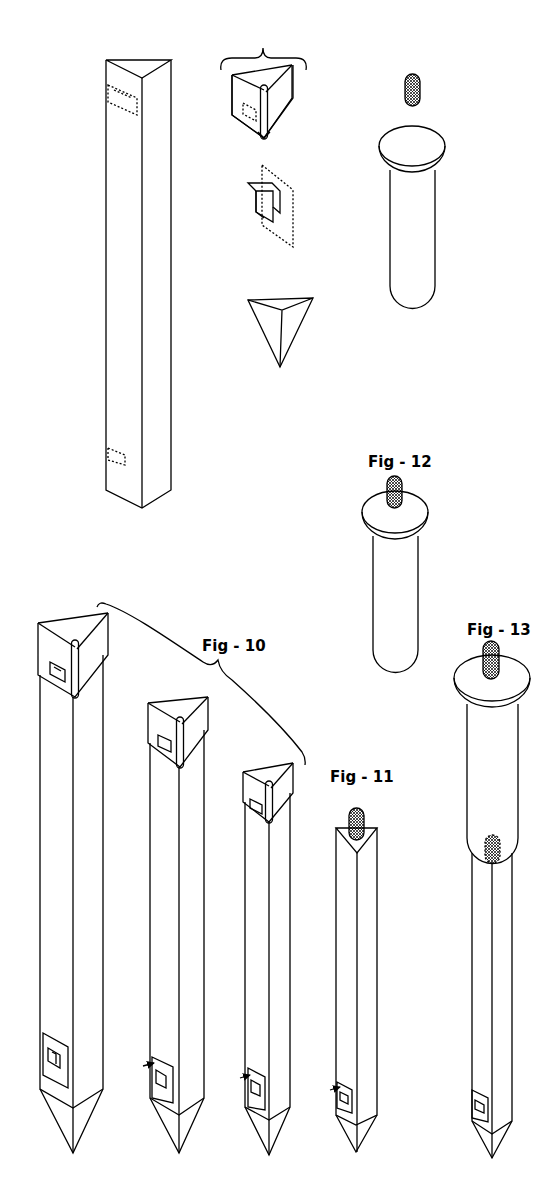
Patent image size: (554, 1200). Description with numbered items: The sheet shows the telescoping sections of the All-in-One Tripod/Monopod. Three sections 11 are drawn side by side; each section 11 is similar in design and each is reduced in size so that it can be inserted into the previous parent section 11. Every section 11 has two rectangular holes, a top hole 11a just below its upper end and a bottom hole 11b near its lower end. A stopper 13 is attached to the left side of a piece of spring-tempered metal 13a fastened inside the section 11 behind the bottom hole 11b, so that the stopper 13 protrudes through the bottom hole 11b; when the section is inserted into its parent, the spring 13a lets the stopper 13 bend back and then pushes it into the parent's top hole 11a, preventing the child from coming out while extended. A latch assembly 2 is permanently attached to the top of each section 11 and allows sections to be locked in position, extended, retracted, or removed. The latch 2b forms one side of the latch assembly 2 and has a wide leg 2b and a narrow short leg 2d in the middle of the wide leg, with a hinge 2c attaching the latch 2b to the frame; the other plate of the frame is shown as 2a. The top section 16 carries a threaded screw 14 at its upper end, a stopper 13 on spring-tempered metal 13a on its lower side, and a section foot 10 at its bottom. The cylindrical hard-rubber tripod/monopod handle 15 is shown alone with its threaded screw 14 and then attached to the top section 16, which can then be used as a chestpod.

In FIG. 10, the latch assembly 2 is at (162, 363).
In FIG. 10, the first cap plate 2a is at (258, 88).
In FIG. 10, the latch 2b is at (290, 96).
In FIG. 10, the hinge 2c is at (254, 143).
In FIG. 10, the narrow short leg 2d is at (256, 117).
In FIG. 10, the section foot 10 is at (269, 323).
In FIG. 13, the section foot 10 is at (479, 1005).
In FIG. 10, the section 11 is at (91, 606).
In FIG. 10, the top rectangular hole 11a is at (118, 99).
In FIG. 10, the bottom rectangular hole 11b is at (118, 452).
In FIG. 10, the stopper 13 is at (245, 183).
In FIG. 10, the spring-tempered metal 13a is at (274, 220).
In FIG. 11, the threaded screw 14 is at (343, 822).
In FIG. 12, the threaded screw 14 is at (393, 90).
In FIG. 12, the tripod/monopod handle 15 is at (403, 217).
In FIG. 11, the top section 16 is at (343, 990).